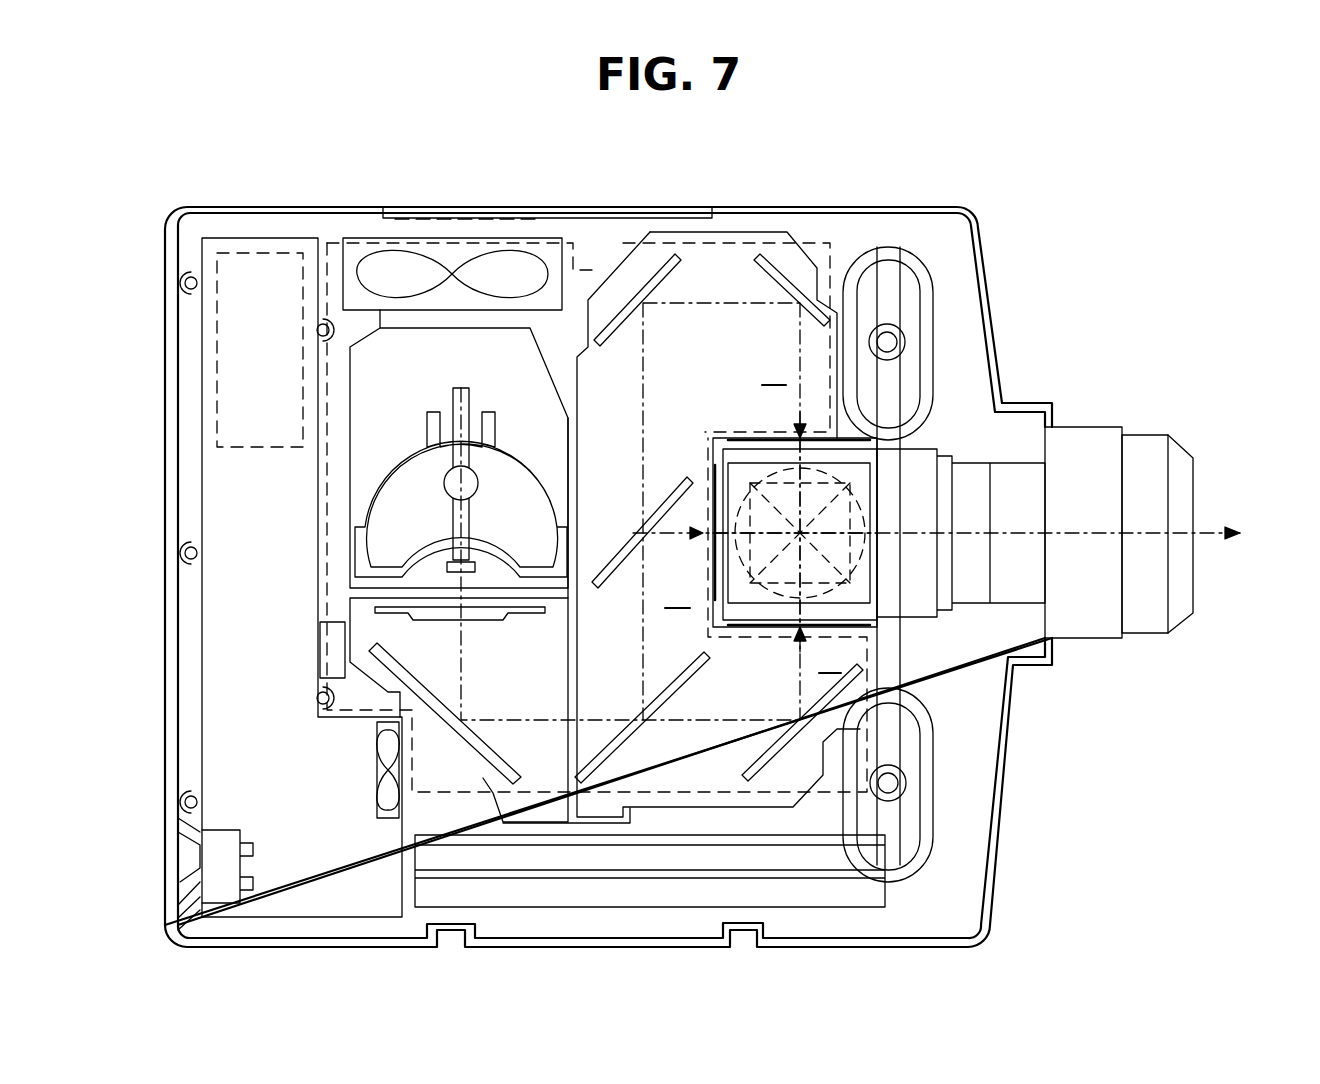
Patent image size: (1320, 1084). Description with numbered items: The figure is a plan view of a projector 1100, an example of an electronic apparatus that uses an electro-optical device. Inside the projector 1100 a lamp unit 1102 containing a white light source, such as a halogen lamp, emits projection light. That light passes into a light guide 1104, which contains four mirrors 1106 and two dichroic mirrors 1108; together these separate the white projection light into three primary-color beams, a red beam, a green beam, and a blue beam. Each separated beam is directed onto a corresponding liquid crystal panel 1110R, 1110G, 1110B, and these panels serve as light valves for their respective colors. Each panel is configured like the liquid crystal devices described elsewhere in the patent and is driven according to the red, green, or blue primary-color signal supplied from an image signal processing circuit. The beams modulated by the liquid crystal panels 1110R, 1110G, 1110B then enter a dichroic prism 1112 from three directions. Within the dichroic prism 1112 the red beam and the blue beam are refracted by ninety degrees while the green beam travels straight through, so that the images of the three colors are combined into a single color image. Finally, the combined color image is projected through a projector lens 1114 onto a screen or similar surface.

The projector 1100 is at (993, 216).
The lamp unit 1102 is at (512, 368).
The light guide 1104 is at (648, 240).
The mirror 1106 is at (763, 273).
The dichroic mirror 1108 is at (638, 548).
The liquid crystal panel 1110R is at (757, 437).
The liquid crystal panel 1110G is at (717, 498).
The liquid crystal panel 1110B is at (760, 617).
The dichroic prism 1112 is at (873, 607).
The projector lens 1114 is at (1157, 442).